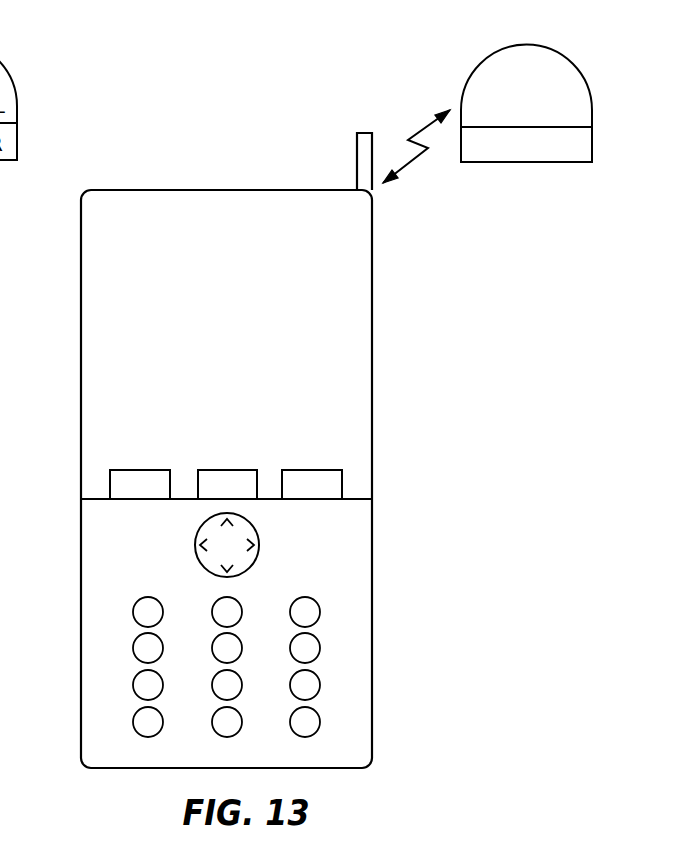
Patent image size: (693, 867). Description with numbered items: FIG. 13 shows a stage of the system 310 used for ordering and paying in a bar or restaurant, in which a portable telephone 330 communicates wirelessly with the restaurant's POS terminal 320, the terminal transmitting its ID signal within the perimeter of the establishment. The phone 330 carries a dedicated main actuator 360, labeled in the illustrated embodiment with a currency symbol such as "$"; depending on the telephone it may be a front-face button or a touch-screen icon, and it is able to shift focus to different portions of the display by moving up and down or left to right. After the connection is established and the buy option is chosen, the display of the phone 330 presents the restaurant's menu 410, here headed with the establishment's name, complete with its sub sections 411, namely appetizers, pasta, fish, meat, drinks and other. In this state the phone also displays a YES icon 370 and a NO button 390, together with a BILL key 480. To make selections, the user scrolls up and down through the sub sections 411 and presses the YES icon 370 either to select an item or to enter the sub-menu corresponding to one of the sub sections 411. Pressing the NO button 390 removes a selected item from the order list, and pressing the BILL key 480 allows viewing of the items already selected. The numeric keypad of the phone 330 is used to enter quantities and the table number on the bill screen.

The system 310 is at (410, 137).
The POS terminal 320 is at (542, 162).
The portable telephone 330 is at (373, 636).
The main actuator 360 is at (258, 543).
The YES icon 370 is at (110, 484).
The NO button 390 is at (342, 483).
The menu 410 is at (298, 226).
The sub sections 411 is at (253, 423).
The BILL key 480 is at (240, 470).